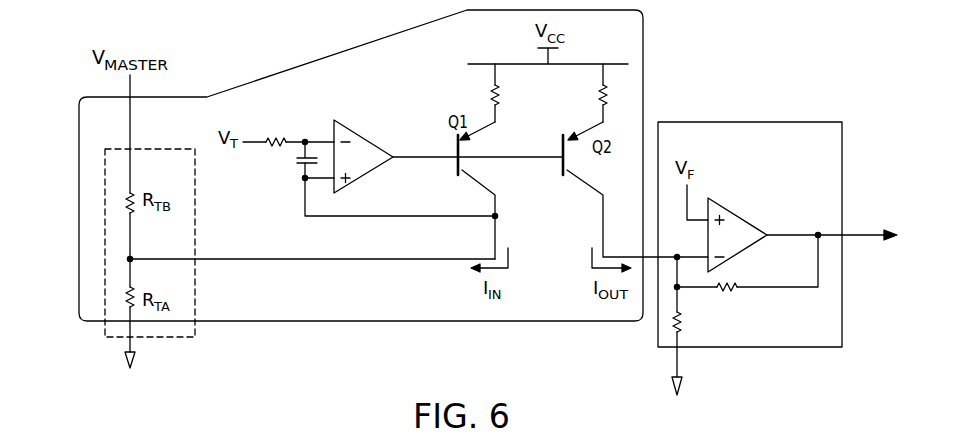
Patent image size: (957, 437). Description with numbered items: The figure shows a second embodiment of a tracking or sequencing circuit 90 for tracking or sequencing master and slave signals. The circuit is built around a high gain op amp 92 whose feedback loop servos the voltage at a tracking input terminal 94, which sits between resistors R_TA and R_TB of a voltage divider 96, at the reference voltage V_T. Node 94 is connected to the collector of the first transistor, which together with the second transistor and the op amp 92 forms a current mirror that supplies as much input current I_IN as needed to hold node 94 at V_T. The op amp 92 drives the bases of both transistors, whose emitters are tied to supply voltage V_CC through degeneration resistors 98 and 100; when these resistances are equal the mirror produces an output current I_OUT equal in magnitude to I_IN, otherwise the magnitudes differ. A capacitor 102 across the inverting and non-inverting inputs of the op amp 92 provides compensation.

The tracking or sequencing circuit 90 is at (79, 135).
The high gain op amp 92 is at (367, 137).
The tracking input terminal 94 is at (130, 259).
The voltage divider 96 is at (105, 337).
The degeneration resistor 98 is at (489, 97).
The degeneration resistor 100 is at (608, 98).
The capacitor 102 is at (297, 160).